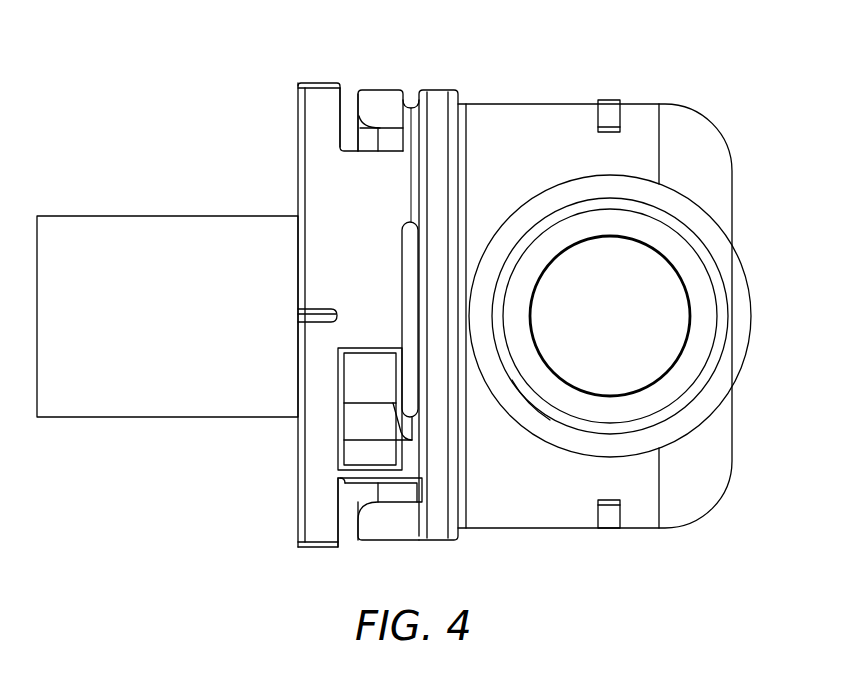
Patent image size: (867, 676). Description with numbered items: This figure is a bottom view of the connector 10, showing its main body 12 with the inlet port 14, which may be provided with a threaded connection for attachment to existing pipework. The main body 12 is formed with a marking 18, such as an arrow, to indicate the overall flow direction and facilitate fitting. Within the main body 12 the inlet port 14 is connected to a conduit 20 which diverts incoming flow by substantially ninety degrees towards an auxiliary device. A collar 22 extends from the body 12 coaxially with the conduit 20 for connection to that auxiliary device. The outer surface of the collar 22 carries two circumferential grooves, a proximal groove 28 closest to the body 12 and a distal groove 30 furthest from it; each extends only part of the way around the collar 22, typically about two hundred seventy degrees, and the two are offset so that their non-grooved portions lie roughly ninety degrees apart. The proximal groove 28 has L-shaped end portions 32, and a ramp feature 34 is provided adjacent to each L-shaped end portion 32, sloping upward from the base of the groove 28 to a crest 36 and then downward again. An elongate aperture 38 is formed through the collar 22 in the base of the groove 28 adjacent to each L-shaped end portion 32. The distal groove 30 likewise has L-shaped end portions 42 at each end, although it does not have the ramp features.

The connector 10 is at (622, 303).
The main body 12 is at (722, 182).
The inlet port 14 is at (662, 343).
The marking 18 is at (608, 98).
The conduit 20 is at (163, 216).
The collar 22 is at (316, 107).
The proximal groove 28 is at (412, 96).
The distal groove 30 is at (350, 96).
The L-shaped end portion 32 is at (392, 458).
The ramp feature 34 is at (380, 423).
The crest 36 is at (372, 404).
The elongate aperture 38 is at (408, 250).
The L-shaped end portion 42 is at (371, 140).